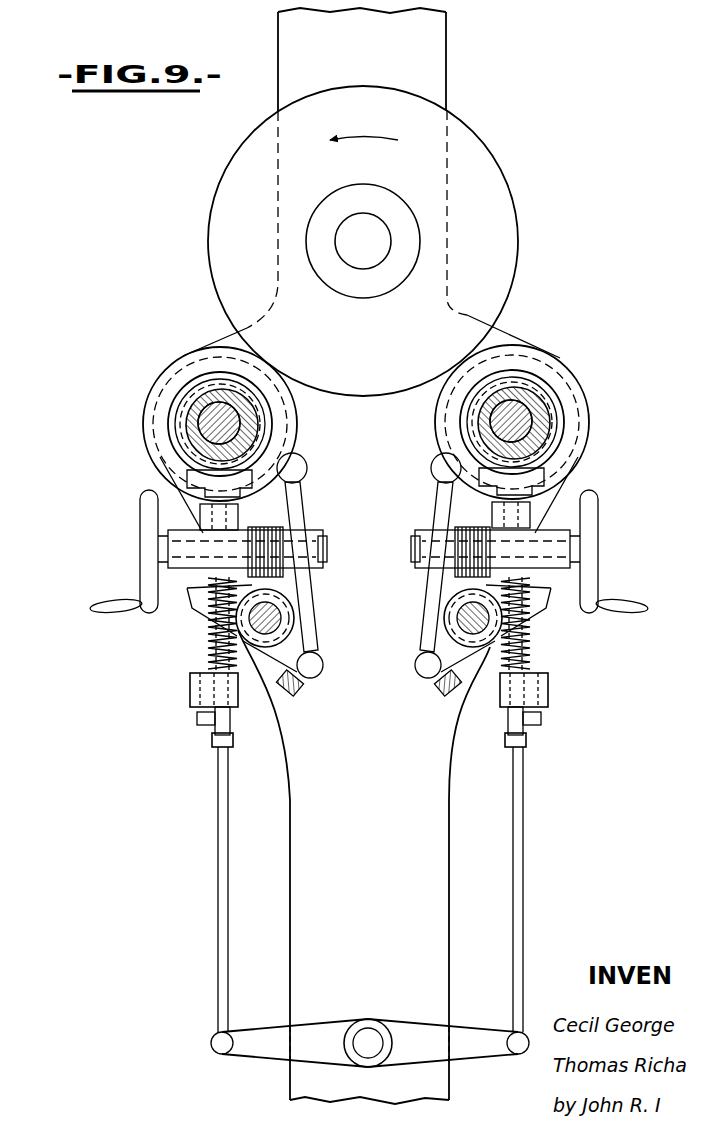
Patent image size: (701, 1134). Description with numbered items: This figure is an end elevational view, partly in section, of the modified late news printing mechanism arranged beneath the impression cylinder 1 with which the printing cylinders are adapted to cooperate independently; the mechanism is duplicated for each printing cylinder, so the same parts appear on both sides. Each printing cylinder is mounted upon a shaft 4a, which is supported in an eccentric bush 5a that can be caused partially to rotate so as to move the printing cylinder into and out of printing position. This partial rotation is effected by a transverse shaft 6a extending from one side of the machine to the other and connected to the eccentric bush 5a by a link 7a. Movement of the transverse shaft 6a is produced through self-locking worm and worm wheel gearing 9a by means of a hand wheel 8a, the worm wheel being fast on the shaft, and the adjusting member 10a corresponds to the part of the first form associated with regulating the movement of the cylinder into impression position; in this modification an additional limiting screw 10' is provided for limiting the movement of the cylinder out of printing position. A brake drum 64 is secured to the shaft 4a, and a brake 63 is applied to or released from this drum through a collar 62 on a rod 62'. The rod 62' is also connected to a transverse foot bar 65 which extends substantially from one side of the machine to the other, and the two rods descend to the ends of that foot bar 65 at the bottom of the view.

The impression cylinder 1 is at (507, 187).
The shaft 4a is at (201, 397).
The eccentric bush 5a is at (240, 405).
The brake drum 64 is at (167, 446).
The brake 63 is at (188, 483).
The hand wheel 8a is at (628, 515).
The link 7a is at (304, 512).
The worm and worm wheel gearing 9a is at (246, 586).
The transverse shaft 6a is at (276, 612).
The limiting screw 10' is at (368, 688).
The regulating means 10a is at (560, 663).
The collar 62 is at (376, 753).
The rod 62' is at (371, 889).
The transverse foot bar 65 is at (210, 1043).